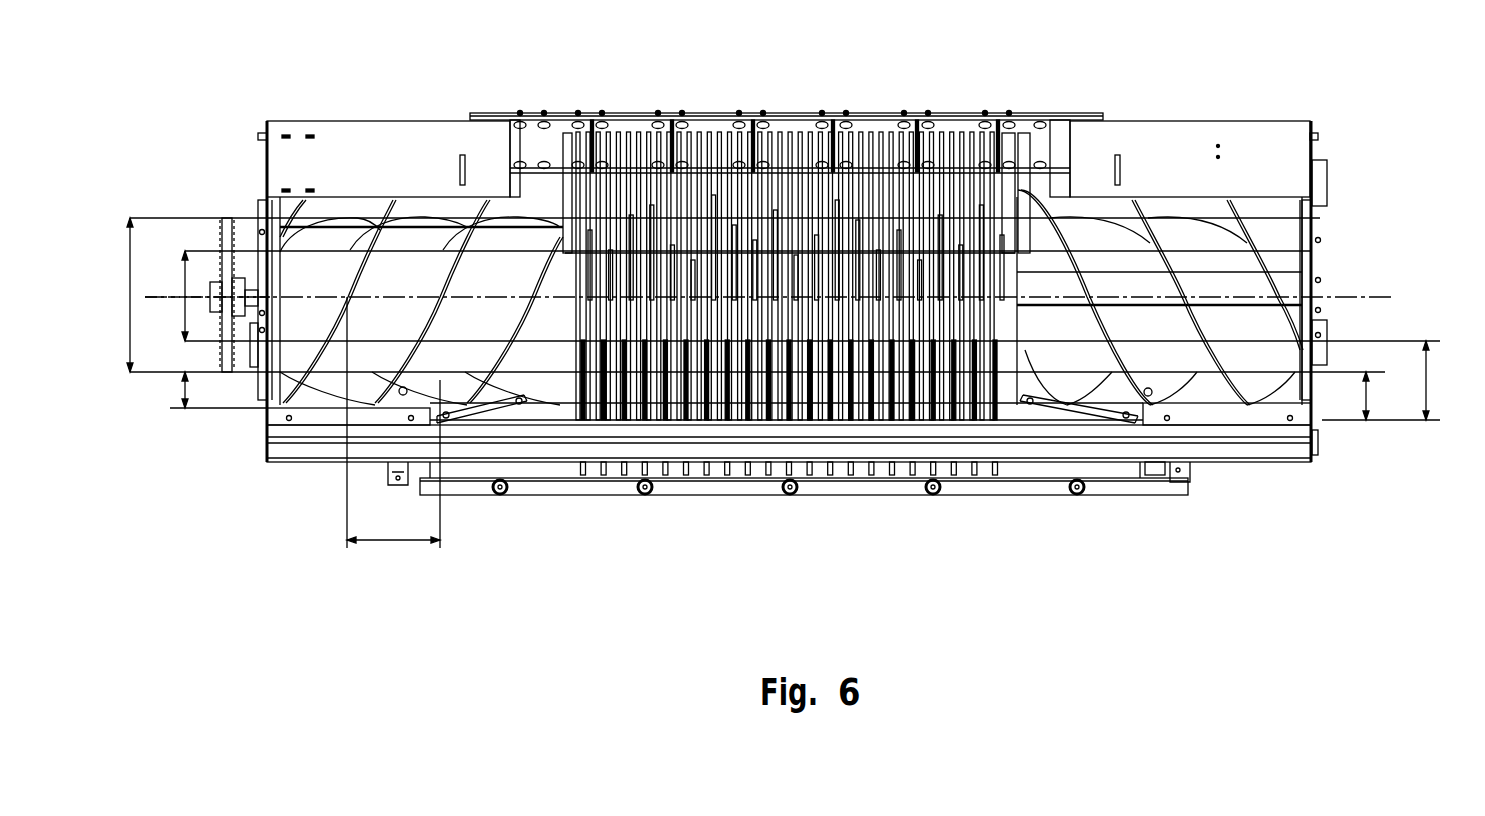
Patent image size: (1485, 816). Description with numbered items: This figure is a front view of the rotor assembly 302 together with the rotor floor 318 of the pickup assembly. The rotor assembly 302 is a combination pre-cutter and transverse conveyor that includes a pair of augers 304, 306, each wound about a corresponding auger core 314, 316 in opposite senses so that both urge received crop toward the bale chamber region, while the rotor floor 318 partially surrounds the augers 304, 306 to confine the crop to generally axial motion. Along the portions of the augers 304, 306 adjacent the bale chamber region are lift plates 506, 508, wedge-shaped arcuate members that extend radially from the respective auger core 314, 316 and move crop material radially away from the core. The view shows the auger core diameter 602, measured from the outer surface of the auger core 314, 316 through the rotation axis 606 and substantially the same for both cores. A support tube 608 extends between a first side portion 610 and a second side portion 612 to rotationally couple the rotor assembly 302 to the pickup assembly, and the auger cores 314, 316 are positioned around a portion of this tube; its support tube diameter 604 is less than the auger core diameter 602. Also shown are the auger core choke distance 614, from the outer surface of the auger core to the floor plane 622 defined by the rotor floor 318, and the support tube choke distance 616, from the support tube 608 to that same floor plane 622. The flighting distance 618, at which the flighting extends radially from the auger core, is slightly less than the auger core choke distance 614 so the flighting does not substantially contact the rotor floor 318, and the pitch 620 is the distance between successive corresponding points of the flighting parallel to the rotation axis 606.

The rotor assembly 302 is at (798, 295).
The auger 304 is at (432, 182).
The auger 306 is at (1257, 181).
The auger core 314 is at (320, 278).
The auger core 316 is at (1190, 237).
The rotor floor 318 is at (1053, 430).
The lift plate 506 is at (537, 323).
The lift plate 508 is at (1030, 223).
The auger core diameter 602 is at (126, 243).
The support tube diameter 604 is at (184, 290).
The rotation axis 606 is at (160, 300).
The support tube 608 is at (815, 245).
The first side portion 610 is at (267, 173).
The second side portion 612 is at (1314, 388).
The auger core choke distance 614 is at (1368, 396).
The support tube choke distance 616 is at (1427, 381).
The flighting distance 618 is at (184, 392).
The pitch 620 is at (391, 543).
The floor plane 622 is at (817, 422).